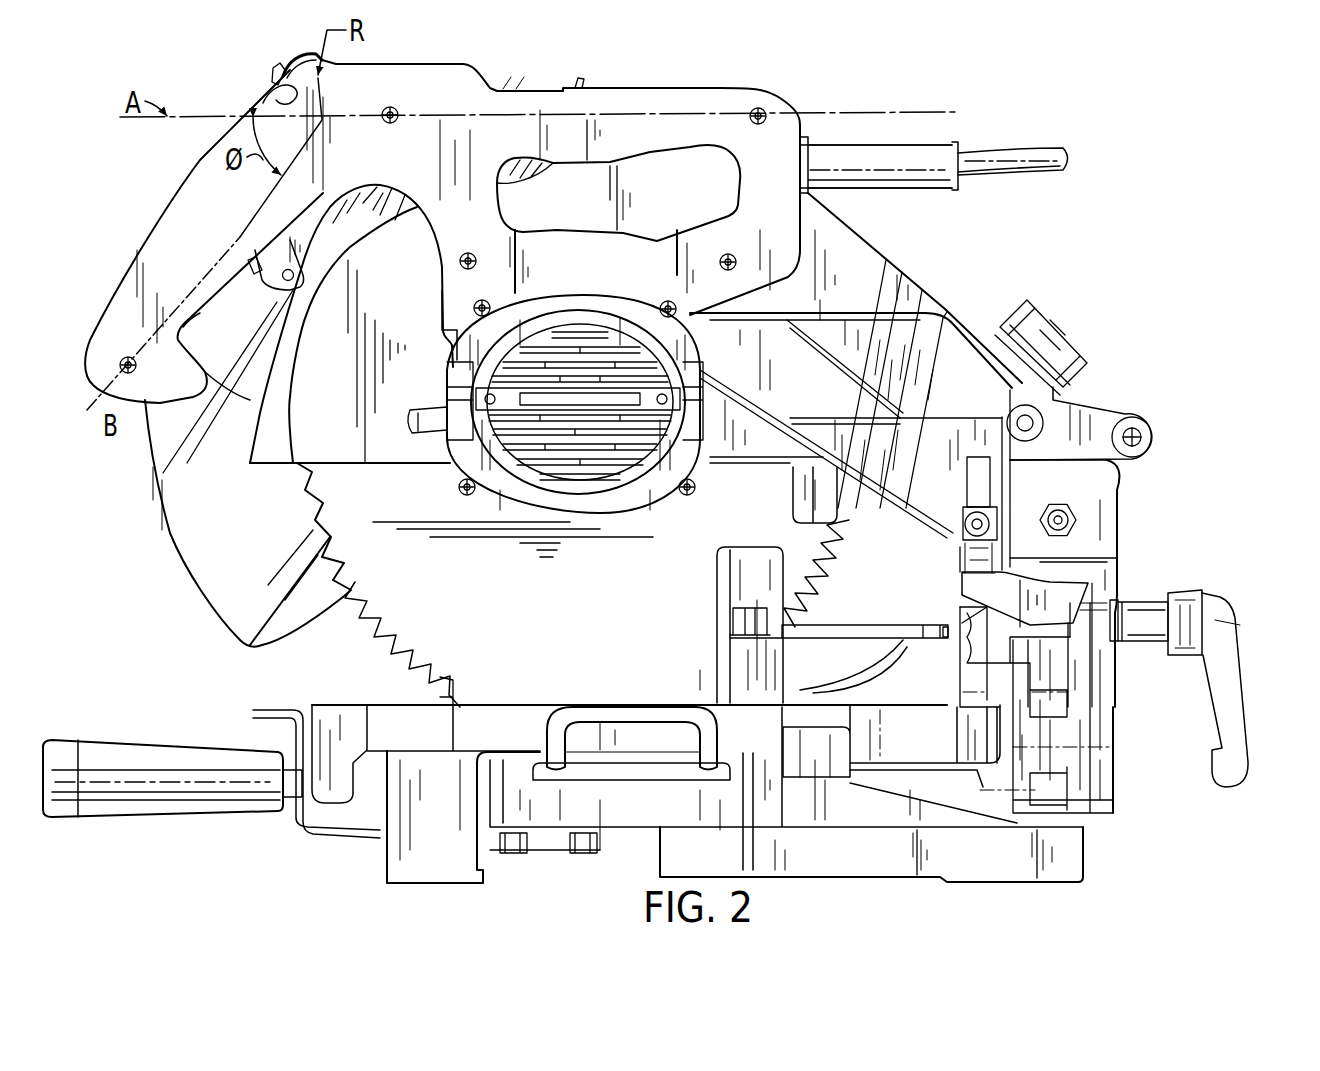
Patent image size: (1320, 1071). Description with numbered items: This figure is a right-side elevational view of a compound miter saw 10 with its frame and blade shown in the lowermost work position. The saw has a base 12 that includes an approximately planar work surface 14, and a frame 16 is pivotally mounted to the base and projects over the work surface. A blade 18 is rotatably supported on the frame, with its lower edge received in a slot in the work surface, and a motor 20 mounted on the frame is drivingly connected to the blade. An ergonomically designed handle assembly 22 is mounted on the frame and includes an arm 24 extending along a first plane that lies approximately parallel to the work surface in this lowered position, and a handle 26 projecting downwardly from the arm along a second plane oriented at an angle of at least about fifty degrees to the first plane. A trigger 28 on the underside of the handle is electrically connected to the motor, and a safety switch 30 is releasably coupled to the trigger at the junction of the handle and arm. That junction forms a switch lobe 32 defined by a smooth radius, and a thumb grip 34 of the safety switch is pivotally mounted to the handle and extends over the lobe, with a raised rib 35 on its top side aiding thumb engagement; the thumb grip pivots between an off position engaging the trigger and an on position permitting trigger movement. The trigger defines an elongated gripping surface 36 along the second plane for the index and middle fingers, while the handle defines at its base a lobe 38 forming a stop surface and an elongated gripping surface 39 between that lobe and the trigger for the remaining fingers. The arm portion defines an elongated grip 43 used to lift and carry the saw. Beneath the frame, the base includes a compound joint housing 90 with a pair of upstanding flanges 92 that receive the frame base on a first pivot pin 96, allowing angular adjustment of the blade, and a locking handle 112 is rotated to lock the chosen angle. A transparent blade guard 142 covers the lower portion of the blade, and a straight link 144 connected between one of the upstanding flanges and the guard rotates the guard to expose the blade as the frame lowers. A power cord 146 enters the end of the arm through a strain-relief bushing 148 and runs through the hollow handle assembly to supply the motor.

The compound miter saw 10 is at (827, 80).
The base 12 is at (363, 857).
The work surface 14 is at (533, 703).
The frame 16 is at (945, 282).
The blade 18 is at (370, 640).
The motor 20 is at (583, 293).
The handle assembly 22 is at (441, 55).
The arm 24 is at (627, 80).
The handle 26 is at (180, 172).
The trigger 28 is at (267, 273).
The safety switch 30 is at (287, 22).
The switch lobe 32 is at (270, 100).
The thumb grip 34 is at (292, 56).
The raised rib 35 is at (273, 68).
The elongated gripping surface 36 is at (353, 188).
The lobe 38 is at (197, 387).
The elongated gripping surface 39 is at (207, 310).
The elongated grip 43 is at (653, 150).
The compound joint housing 90 is at (1133, 760).
The upstanding flanges 92 is at (1067, 453).
The first pivot pin 96 is at (1073, 530).
The locking handle 112 is at (1237, 677).
The transparent blade guard 142 is at (160, 497).
The straight link 144 is at (1100, 400).
The power cord 146 is at (1020, 157).
The strain-relief bushing 148 is at (900, 173).